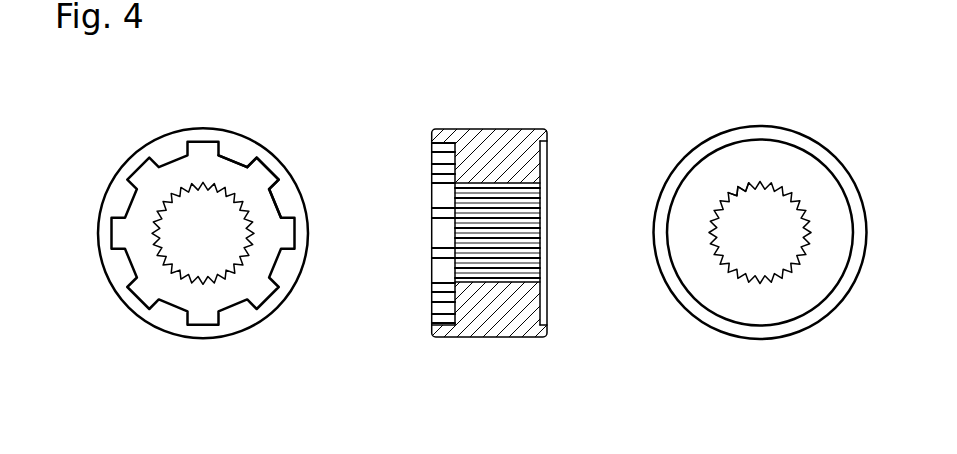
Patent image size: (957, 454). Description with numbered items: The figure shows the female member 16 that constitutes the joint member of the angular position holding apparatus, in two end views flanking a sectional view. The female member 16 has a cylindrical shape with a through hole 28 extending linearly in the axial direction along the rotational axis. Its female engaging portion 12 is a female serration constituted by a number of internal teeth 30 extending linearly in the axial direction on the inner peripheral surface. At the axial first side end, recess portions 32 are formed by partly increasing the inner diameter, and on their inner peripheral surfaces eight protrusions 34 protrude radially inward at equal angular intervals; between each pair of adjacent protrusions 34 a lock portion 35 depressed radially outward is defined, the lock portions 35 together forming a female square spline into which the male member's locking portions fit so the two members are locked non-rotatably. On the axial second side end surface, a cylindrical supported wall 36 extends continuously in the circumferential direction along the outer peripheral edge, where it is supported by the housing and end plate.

The female engaging portion 12 is at (520, 207).
The female member 16 is at (506, 79).
The through hole 28 is at (190, 245).
The internal teeth 30 is at (723, 208).
The recess portions 32 is at (175, 172).
The protrusions 34 is at (232, 170).
The lock portion 35 is at (262, 175).
The supported wall 36 is at (547, 133).